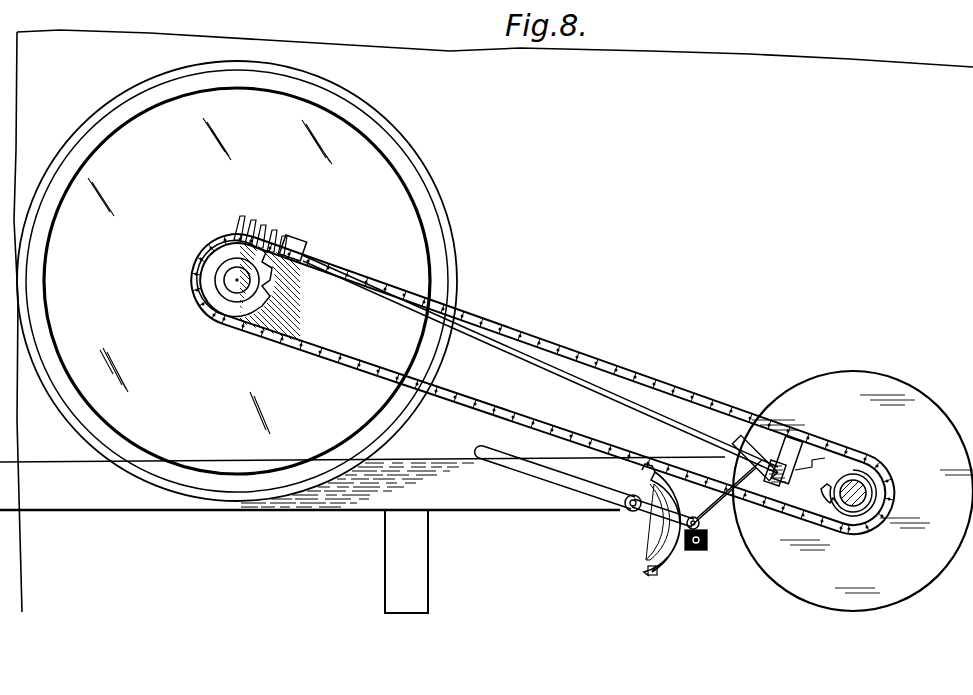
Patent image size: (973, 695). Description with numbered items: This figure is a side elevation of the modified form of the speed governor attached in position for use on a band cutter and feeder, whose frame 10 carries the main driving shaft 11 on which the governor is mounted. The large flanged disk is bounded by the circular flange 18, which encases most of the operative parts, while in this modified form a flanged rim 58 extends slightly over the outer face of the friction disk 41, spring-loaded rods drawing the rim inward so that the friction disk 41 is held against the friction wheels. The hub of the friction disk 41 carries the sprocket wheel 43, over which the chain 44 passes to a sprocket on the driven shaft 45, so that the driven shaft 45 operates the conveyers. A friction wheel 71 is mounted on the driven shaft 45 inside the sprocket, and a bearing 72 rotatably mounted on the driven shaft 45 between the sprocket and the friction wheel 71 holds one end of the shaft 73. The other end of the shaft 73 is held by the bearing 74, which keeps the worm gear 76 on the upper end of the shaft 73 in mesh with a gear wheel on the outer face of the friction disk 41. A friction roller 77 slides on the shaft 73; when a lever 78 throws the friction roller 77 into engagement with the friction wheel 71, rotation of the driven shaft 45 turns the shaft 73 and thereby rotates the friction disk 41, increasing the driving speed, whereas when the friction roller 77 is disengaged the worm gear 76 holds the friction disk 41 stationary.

The frame 10 is at (486, 321).
The main driving shaft 11 is at (236, 281).
The circular flange 18 is at (99, 116).
The friction disk 41 is at (210, 276).
The sprocket wheel 43 is at (283, 284).
The chain 44 is at (509, 333).
The driven shaft 45 is at (873, 493).
The flanged rim 58 is at (238, 281).
The friction wheel 71 is at (876, 393).
The bearing 72 is at (810, 474).
The shaft 73 is at (556, 359).
The bearing 74 is at (302, 254).
The worm gear 76 is at (262, 228).
The friction roller 77 is at (786, 490).
The lever 78 is at (660, 512).